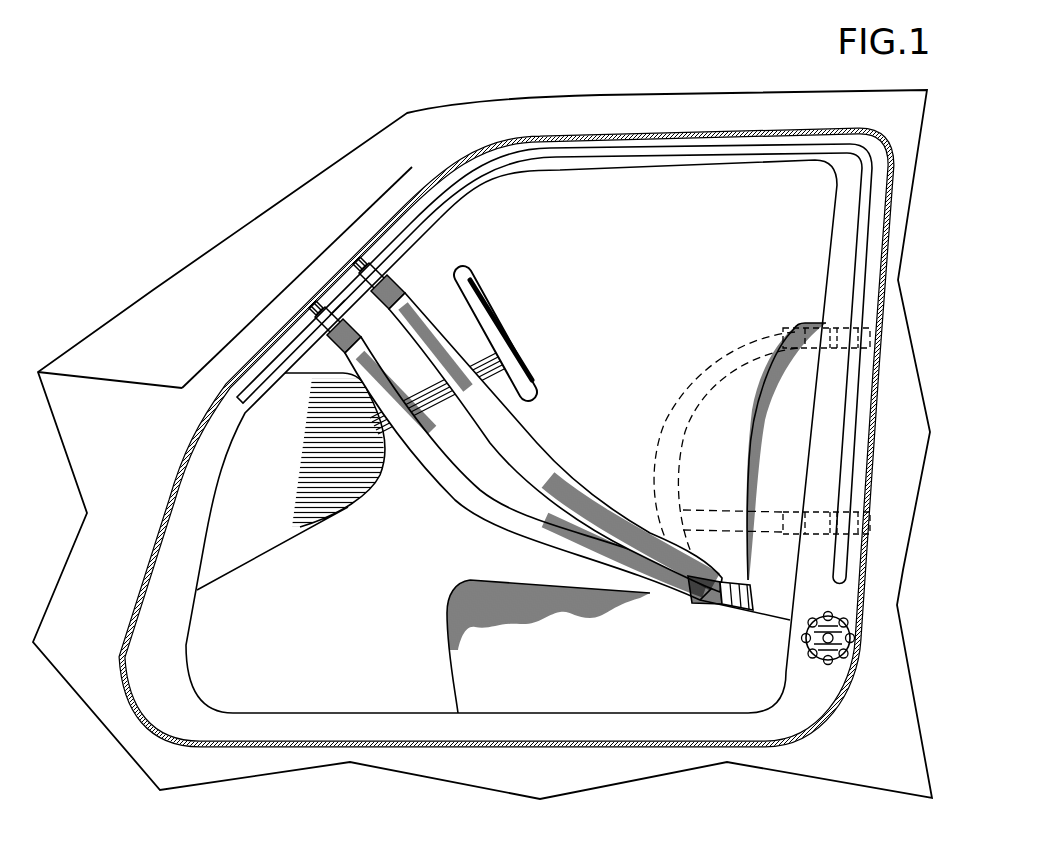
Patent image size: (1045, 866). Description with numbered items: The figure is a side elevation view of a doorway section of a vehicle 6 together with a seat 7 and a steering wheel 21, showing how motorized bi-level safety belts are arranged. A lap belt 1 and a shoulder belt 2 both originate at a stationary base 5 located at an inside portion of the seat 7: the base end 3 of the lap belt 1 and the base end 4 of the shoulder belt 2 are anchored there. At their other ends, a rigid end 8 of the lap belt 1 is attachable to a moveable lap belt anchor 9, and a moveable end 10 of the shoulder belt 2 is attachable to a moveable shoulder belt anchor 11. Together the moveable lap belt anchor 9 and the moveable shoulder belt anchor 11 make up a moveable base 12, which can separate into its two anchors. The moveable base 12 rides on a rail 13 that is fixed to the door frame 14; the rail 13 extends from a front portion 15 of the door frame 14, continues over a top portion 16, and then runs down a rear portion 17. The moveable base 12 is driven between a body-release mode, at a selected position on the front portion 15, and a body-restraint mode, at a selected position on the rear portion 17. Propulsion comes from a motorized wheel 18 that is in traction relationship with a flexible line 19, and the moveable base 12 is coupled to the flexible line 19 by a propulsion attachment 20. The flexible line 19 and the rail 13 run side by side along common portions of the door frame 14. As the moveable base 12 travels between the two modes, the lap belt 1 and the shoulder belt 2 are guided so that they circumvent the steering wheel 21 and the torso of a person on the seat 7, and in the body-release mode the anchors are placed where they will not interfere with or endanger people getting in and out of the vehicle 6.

The lap belt 1 is at (513, 447).
The shoulder belt 2 is at (443, 447).
The base end of the lap belt 3 is at (667, 562).
The base end of the shoulder belt 4 is at (683, 575).
The stationary base 5 is at (723, 598).
The vehicle 6 is at (407, 113).
The seat 7 is at (470, 582).
The rigid end of the lap belt 8 is at (392, 275).
The moveable lap belt anchor 9 is at (412, 168).
The moveable end of the shoulder belt 10 is at (292, 348).
The moveable shoulder belt anchor 11 is at (313, 320).
The moveable base 12 is at (268, 245).
The rail 13 is at (640, 153).
The door frame 14 is at (210, 528).
The front portion of the door frame 15 is at (182, 388).
The top portion of the door frame 16 is at (693, 165).
The rear portion of the door frame 17 is at (820, 395).
The motorized wheel 18 is at (826, 656).
The flexible line 19 is at (737, 137).
The propulsion attachment 20 is at (316, 302).
The steering wheel 21 is at (443, 330).